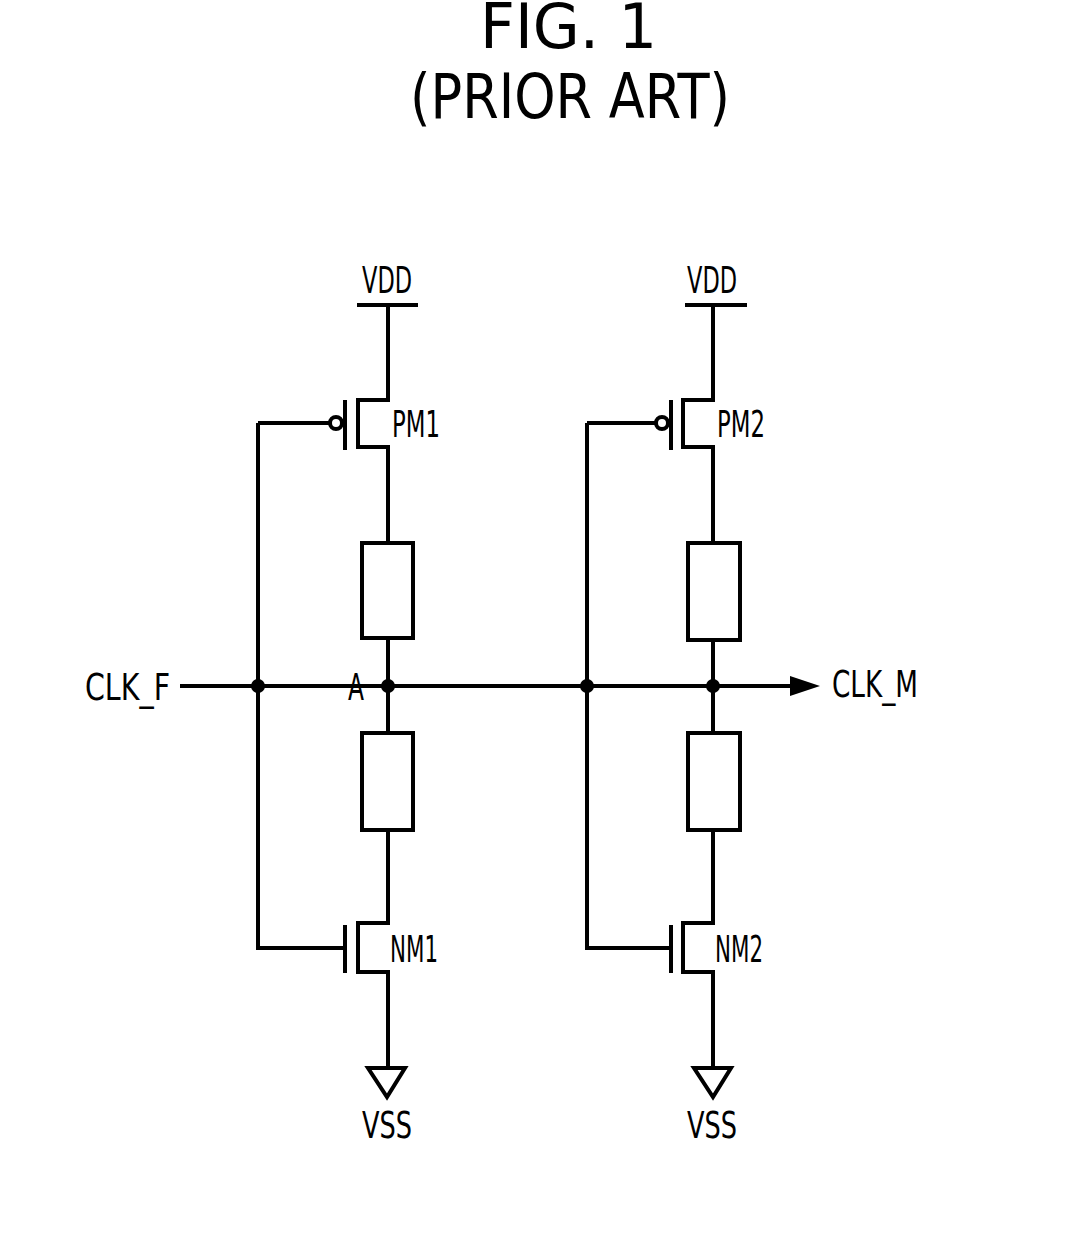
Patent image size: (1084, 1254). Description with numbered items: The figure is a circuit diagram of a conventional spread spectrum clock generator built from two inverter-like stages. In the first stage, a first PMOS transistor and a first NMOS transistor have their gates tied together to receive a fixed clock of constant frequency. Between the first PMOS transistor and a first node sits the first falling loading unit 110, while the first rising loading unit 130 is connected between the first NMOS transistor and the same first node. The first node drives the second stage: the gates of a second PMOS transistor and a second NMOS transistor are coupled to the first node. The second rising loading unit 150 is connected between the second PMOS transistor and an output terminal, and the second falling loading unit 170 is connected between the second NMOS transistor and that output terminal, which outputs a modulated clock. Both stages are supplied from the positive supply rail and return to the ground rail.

The first falling loading unit 110 is at (413, 590).
The first rising loading unit 130 is at (413, 782).
The second rising loading unit 150 is at (740, 590).
The second falling loading unit 170 is at (740, 782).